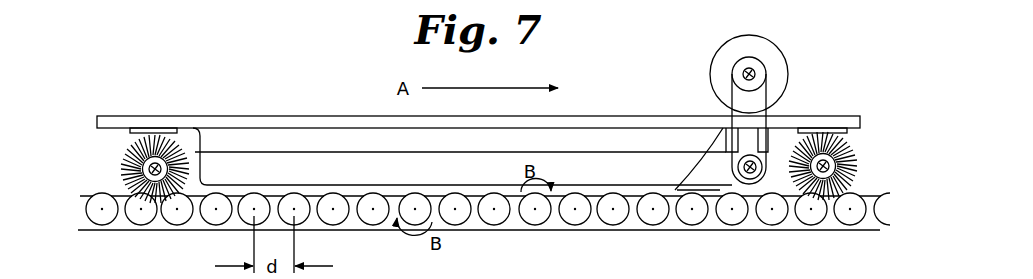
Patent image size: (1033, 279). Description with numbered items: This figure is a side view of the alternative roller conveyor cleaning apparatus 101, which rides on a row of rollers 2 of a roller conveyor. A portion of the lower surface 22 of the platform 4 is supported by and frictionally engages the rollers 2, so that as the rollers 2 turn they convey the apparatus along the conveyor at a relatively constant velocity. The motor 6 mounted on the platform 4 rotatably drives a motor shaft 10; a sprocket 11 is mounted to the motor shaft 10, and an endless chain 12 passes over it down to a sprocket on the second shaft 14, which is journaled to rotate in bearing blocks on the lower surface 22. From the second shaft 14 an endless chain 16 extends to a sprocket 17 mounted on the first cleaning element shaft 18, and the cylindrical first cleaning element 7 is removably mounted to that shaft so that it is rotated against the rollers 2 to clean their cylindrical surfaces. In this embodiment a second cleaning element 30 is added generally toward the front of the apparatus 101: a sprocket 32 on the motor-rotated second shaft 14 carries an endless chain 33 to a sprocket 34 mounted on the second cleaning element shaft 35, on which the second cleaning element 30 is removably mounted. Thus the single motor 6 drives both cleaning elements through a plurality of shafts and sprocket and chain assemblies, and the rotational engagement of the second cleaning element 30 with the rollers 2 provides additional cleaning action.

The roller conveyor cleaning apparatus 101 is at (171, 96).
The rollers 2 is at (145, 224).
The platform 4 is at (263, 116).
The motor 6 is at (777, 48).
The first cleaning element 7 is at (128, 169).
The motor shaft 10 is at (733, 68).
The sprocket 11 is at (766, 69).
The endless chain 12 is at (731, 96).
The second shaft 14 is at (736, 168).
The endless chain 16 is at (288, 151).
The sprocket 17 is at (126, 186).
The first cleaning element shaft 18 is at (143, 163).
The lower surface 22 is at (355, 194).
The second cleaning element 30 is at (851, 147).
The sprocket 32 is at (726, 187).
The endless chain 33 is at (718, 190).
The sprocket 34 is at (827, 207).
The second cleaning element shaft 35 is at (836, 166).